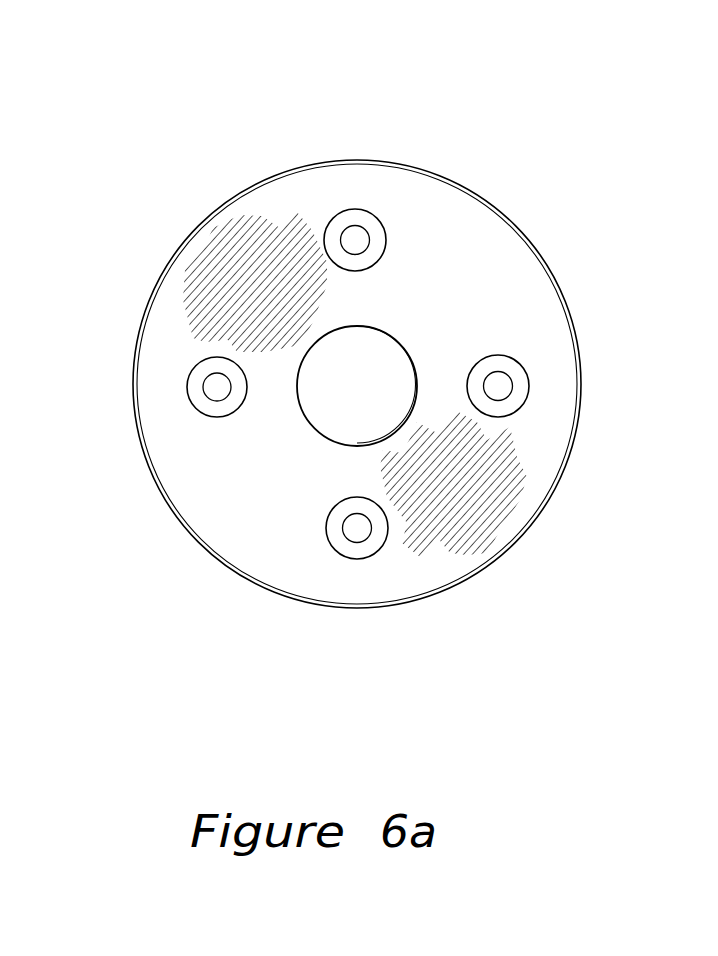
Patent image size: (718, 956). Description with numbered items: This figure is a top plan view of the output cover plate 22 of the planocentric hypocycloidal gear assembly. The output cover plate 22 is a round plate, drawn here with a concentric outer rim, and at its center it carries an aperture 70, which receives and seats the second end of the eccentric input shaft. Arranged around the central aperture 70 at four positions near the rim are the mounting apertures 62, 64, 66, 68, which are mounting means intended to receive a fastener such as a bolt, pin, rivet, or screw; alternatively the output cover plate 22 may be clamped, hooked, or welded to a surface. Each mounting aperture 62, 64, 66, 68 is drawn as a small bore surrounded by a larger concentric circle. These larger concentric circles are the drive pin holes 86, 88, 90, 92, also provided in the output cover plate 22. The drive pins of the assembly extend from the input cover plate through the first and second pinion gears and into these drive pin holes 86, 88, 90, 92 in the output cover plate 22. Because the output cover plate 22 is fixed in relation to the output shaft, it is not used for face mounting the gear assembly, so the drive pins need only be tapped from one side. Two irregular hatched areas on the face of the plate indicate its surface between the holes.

The output cover plate 22 is at (519, 225).
The aperture 70 is at (313, 427).
The aperture 62 is at (356, 242).
The aperture 64 is at (498, 386).
The aperture 66 is at (355, 530).
The aperture 68 is at (216, 388).
The drive pin hole 86 is at (356, 209).
The drive pin hole 88 is at (528, 386).
The drive pin hole 90 is at (352, 559).
The drive pin hole 92 is at (187, 387).